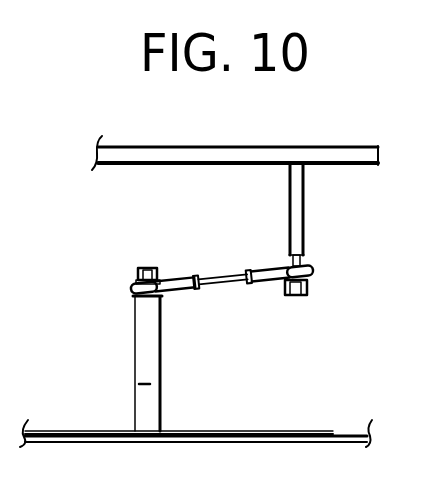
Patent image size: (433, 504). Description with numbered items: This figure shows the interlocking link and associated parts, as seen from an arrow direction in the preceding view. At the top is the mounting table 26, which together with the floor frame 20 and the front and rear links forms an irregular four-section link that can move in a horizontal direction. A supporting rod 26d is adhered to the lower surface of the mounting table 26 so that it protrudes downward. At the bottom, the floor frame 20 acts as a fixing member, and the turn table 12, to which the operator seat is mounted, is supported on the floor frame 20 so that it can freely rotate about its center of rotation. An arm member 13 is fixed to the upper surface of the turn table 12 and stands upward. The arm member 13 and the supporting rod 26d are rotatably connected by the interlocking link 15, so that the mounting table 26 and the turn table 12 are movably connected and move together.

The mounting table 26 is at (187, 165).
The supporting rod 26d is at (304, 213).
The interlocking link 15 is at (221, 291).
The arm member 13 is at (135, 338).
The turn table 12 is at (65, 431).
The floor frame 20 is at (345, 432).